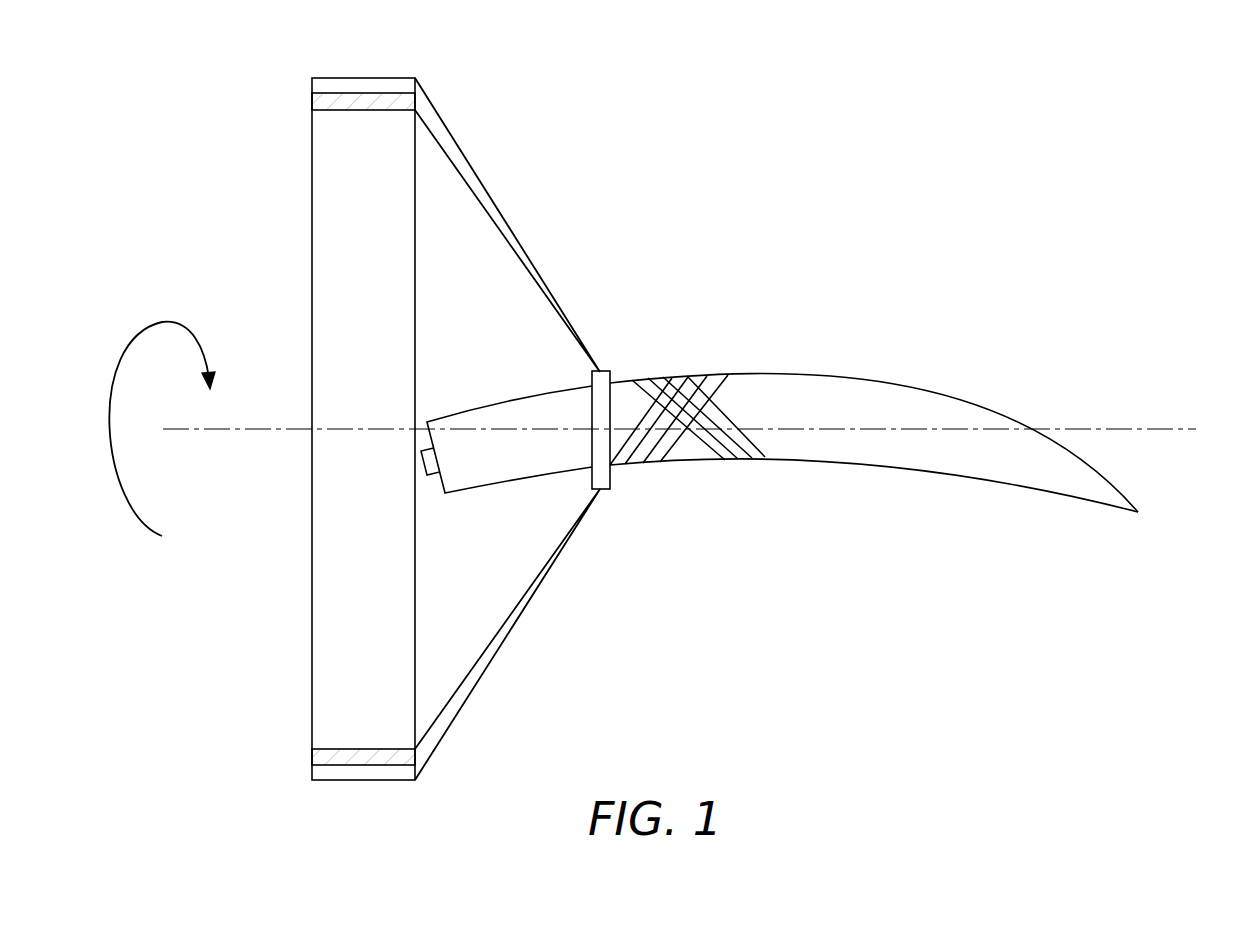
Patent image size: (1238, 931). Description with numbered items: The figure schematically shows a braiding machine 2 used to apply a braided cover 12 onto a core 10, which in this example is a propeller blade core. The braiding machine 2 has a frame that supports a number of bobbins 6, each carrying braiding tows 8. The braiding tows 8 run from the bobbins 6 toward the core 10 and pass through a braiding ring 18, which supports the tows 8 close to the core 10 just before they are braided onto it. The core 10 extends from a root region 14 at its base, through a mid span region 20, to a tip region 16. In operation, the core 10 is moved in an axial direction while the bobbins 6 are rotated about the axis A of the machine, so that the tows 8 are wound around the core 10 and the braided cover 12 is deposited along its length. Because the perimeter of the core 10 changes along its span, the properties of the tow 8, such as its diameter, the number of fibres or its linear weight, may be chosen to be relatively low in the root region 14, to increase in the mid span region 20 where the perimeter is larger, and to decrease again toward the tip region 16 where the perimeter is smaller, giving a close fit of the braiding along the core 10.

The braiding machine 2 is at (267, 139).
The bobbins 6 is at (395, 93).
The braiding tows 8 is at (330, 93).
The core 10 is at (874, 441).
The braided cover 12 is at (705, 375).
The root region 14 is at (472, 477).
The tip region 16 is at (1117, 500).
The braiding ring 18 is at (612, 478).
The mid span region 20 is at (832, 462).
The axis A is at (1188, 427).